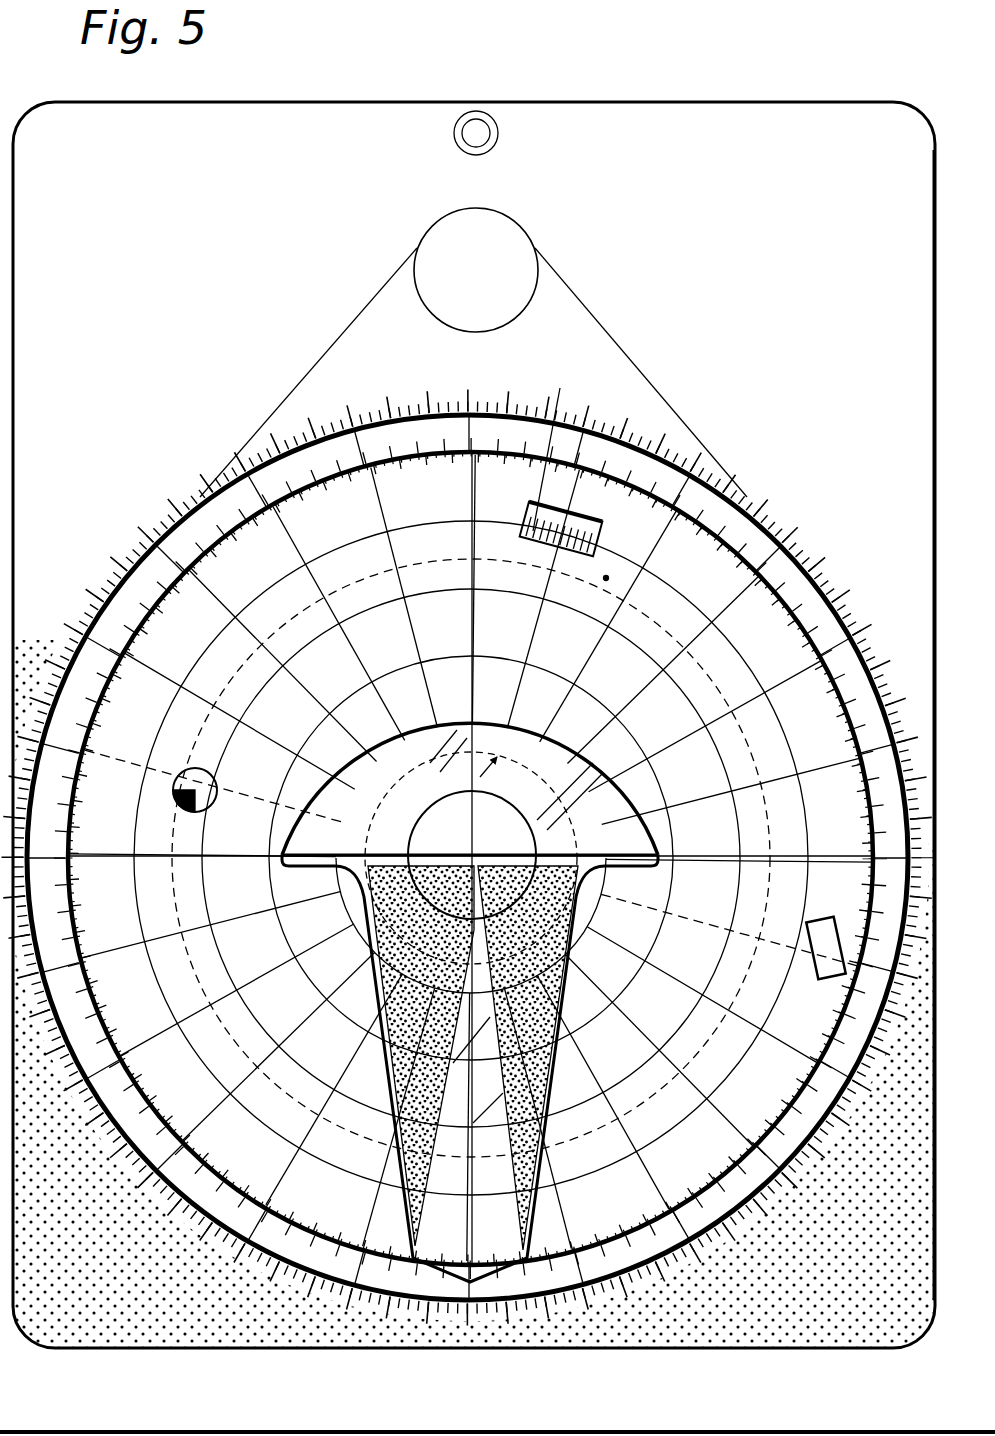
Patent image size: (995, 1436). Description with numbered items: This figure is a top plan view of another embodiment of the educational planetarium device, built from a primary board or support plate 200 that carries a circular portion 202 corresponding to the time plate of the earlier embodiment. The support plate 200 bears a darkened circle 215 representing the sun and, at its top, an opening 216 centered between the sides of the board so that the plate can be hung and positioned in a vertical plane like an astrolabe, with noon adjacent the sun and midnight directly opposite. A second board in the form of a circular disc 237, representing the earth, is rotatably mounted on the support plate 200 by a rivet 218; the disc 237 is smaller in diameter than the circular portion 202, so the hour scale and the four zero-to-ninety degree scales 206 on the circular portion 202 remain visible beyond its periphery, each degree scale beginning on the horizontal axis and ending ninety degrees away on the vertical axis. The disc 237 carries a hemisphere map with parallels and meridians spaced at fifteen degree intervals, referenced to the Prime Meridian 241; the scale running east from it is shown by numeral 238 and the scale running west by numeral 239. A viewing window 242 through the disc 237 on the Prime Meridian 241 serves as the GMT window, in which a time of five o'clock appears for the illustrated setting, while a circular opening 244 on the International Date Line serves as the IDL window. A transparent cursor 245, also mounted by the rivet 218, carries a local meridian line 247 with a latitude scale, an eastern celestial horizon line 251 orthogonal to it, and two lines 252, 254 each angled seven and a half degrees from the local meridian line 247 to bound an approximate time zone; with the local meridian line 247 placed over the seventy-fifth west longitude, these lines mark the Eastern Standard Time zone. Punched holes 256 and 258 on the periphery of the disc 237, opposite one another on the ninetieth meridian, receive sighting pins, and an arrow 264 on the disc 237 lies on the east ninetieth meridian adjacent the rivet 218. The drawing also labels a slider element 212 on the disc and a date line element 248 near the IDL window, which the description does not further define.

The primary board or support plate 200 is at (768, 100).
The circular portion 202 is at (72, 662).
The 0°-90° scales 206 is at (866, 642).
The sliding pointer 212 is at (561, 410).
The darkened circle 215 is at (478, 209).
The opening 216 is at (481, 114).
The rivet 218 is at (470, 855).
The circular disc 237 is at (565, 668).
The east longitude scale 238 is at (725, 612).
The west longitude scale 239 is at (712, 1050).
The Prime Meridian 241 is at (736, 985).
The GMT viewing window 242 is at (818, 918).
The IDL circular opening 244 is at (208, 810).
The transparent cursor 245 is at (562, 1084).
The local meridian line 247 is at (548, 1132).
The international date line 248 is at (176, 776).
The eastern celestial horizon line 251 is at (556, 762).
The time zone boundary line 252 is at (364, 1128).
The time zone boundary line 254 is at (560, 1175).
The punched hole 256 is at (607, 582).
The punched hole 258 is at (370, 1210).
The arrow 264 is at (470, 722).